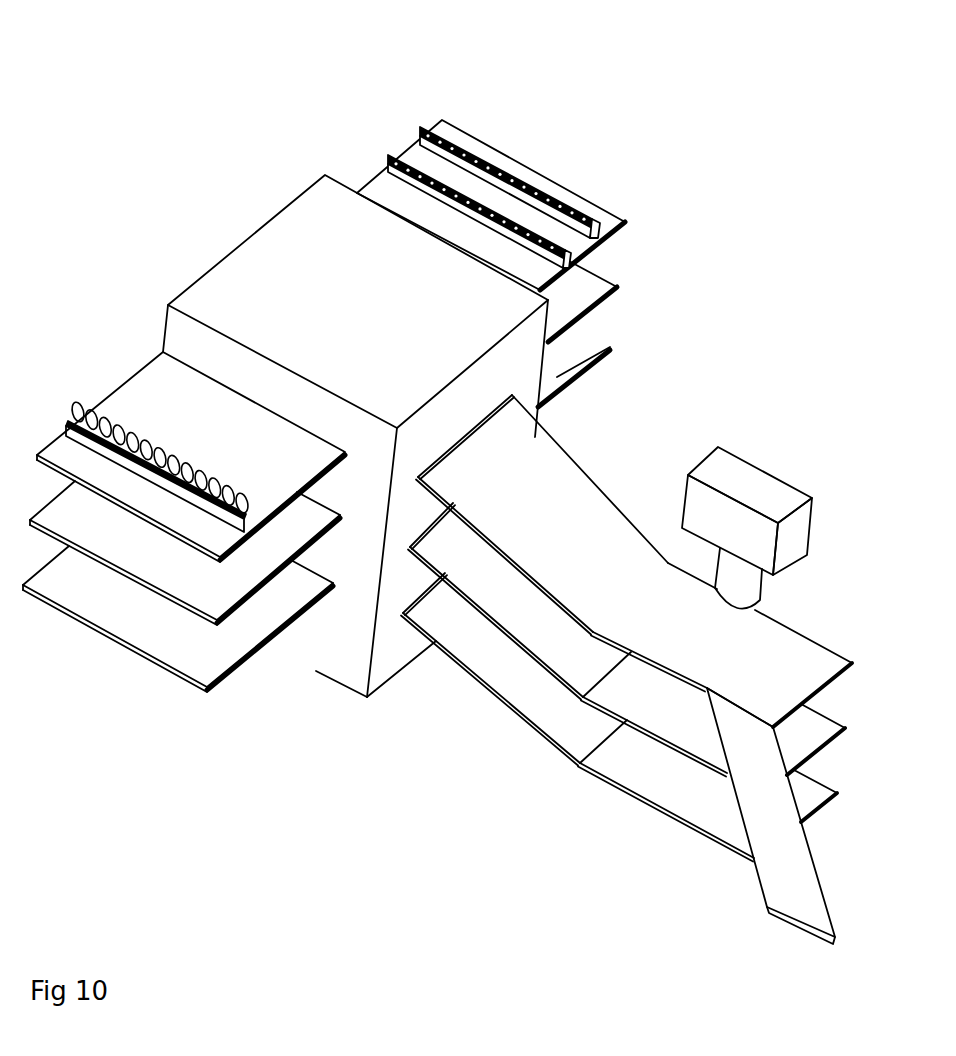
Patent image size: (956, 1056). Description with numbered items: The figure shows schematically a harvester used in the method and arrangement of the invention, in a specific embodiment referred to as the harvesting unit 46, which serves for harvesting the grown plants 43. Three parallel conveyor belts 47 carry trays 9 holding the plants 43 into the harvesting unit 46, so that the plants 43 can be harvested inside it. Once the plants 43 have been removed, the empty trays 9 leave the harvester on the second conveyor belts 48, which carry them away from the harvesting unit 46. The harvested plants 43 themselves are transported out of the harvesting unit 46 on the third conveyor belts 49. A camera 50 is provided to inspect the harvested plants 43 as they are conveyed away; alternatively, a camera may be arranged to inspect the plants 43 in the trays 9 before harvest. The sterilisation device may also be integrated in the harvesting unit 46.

The tray 9 is at (420, 128).
The plant 43 is at (160, 390).
The harvesting unit 46 is at (206, 206).
The conveyor belt 47 is at (238, 628).
The second conveyor belt 48 is at (610, 347).
The third conveyor belt 49 is at (685, 800).
The camera 50 is at (752, 485).